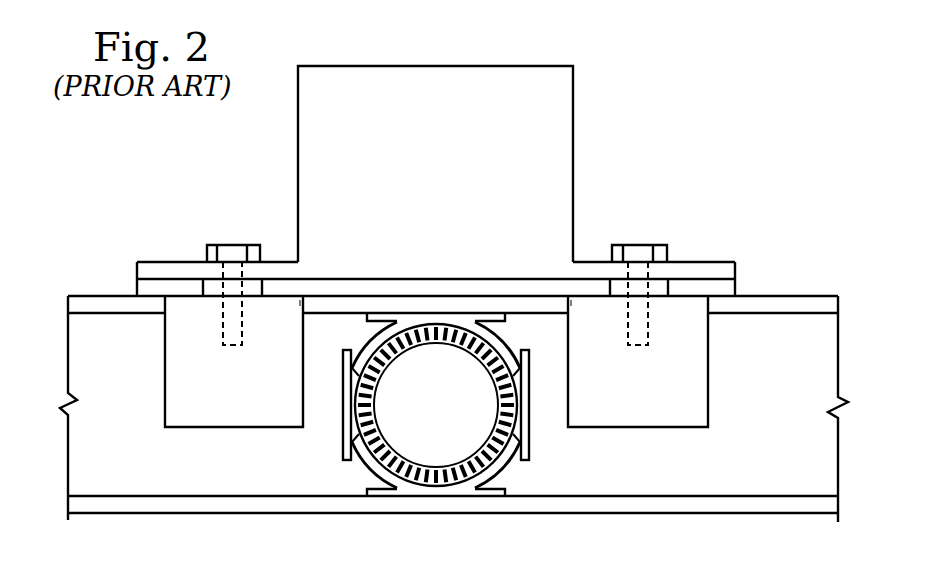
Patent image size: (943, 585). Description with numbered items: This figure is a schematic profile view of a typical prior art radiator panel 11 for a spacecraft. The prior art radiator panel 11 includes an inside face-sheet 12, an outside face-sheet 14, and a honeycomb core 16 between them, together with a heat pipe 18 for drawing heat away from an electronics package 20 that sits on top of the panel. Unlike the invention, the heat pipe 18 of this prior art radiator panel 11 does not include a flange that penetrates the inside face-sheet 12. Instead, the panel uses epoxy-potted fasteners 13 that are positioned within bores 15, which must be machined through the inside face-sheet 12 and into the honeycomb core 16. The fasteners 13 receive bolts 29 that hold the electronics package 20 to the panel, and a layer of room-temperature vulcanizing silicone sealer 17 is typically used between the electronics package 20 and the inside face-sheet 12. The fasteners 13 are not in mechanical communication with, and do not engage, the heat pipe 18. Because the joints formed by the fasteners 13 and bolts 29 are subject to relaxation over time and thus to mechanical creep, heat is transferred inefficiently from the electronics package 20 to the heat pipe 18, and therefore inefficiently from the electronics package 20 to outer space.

The prior art radiator panel 11 is at (785, 181).
The inside face-sheet 12 is at (800, 294).
The epoxy-potted fasteners 13 is at (163, 366).
The outside face-sheet 14 is at (720, 514).
The bores 15 is at (302, 303).
The honeycomb core 16 is at (672, 470).
The RTV silicone sealer 17 is at (407, 282).
The heat pipe 18 is at (529, 425).
The electronics package 20 is at (476, 62).
The bolts 29 is at (232, 245).